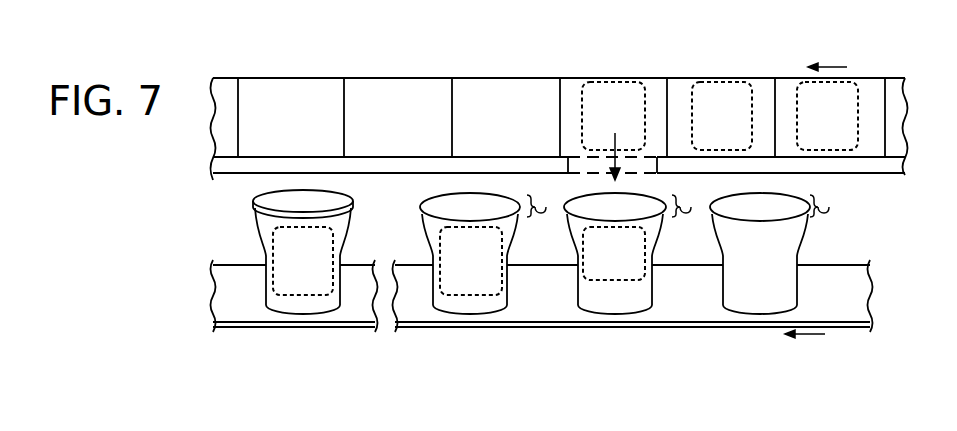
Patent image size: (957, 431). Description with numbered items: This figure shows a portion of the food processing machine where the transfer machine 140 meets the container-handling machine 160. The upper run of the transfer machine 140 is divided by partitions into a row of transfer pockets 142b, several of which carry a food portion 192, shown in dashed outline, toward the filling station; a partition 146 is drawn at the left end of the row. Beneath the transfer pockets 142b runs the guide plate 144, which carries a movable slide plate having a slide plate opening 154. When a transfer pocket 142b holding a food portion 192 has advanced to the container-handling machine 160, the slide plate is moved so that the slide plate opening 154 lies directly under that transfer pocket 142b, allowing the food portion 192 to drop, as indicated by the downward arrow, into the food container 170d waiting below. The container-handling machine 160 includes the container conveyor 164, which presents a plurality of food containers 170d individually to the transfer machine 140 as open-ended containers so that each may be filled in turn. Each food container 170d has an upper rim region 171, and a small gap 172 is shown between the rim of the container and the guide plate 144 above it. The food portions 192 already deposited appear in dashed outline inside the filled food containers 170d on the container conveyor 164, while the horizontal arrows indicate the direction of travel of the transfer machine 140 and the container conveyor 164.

The transfer machine 140 is at (393, 59).
The transfer pocket 142b is at (559, 96).
The guide plate 144 is at (405, 175).
The carrier partition 146 is at (344, 92).
The slide plate opening 154 is at (657, 160).
The container-handling machine 160 is at (361, 344).
The container conveyor 164 is at (522, 330).
The food container 170d is at (432, 288).
The cup rim 171 is at (472, 194).
The gap 172 is at (693, 195).
The food portion 192 is at (733, 58).